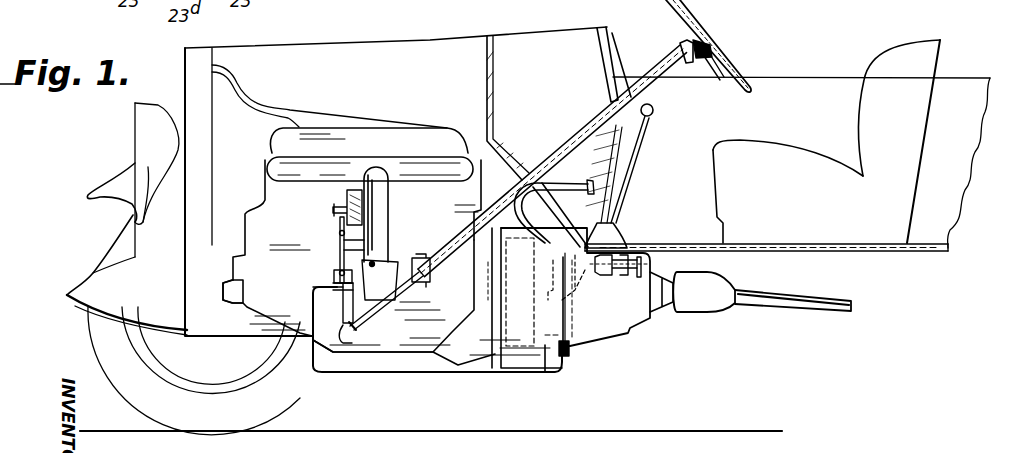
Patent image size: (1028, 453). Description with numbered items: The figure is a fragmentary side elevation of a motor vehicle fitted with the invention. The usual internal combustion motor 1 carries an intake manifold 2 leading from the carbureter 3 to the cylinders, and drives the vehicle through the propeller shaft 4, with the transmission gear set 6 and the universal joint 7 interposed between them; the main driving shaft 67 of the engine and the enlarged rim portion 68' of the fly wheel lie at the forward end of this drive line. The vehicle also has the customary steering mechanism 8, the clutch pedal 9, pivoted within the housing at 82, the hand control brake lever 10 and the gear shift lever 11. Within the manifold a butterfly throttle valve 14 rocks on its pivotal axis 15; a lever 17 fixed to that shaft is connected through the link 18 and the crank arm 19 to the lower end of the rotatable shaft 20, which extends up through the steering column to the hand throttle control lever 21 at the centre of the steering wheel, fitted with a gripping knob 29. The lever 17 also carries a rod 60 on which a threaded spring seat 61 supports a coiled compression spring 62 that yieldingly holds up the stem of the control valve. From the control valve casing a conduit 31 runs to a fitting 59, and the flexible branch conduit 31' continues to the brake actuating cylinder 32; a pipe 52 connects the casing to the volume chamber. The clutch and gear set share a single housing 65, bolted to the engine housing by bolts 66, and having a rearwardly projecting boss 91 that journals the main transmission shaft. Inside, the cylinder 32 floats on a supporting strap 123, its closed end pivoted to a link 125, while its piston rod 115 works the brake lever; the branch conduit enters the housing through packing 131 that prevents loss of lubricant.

The internal combustion motor 1 is at (373, 137).
The intake manifold 2 is at (427, 171).
The carbureter 3 is at (428, 260).
The propeller shaft 4 is at (822, 299).
The transmission gear set 6 is at (638, 333).
The universal joint 7 is at (708, 302).
The steering mechanism 8 is at (662, 67).
The clutch pedal 9 is at (560, 186).
The hand control brake lever 10 is at (633, 164).
The gear shift lever 11 is at (654, 115).
The throttle valve 14 is at (378, 264).
The pivotal axis 15 is at (382, 250).
The lever 17 is at (345, 312).
The link 18 is at (345, 298).
The crank arm 19 is at (352, 343).
The rotatable shaft 20 is at (385, 311).
The hand throttle control lever 21 is at (705, 50).
The gripping knob 29 is at (732, 62).
The conduit 31 is at (322, 250).
The branch conduit 31' is at (412, 342).
The brake actuating cylinder 32 is at (638, 255).
The pipe 52 is at (332, 209).
The fitting 59 is at (338, 278).
The rod 60 is at (362, 320).
The spring seat 61 is at (320, 259).
The coiled compression spring 62 is at (340, 246).
The housing 65 is at (548, 352).
The bolt 66 is at (494, 210).
The main driving shaft 67 is at (488, 280).
The enlarged rim portion 68' is at (522, 318).
The pivotal support 82 is at (565, 232).
The rearwardly projecting boss 91 is at (662, 282).
The piston rod 115 is at (645, 250).
The supporting strap 123 is at (607, 278).
The link 125 is at (578, 268).
The packing 131 is at (570, 348).